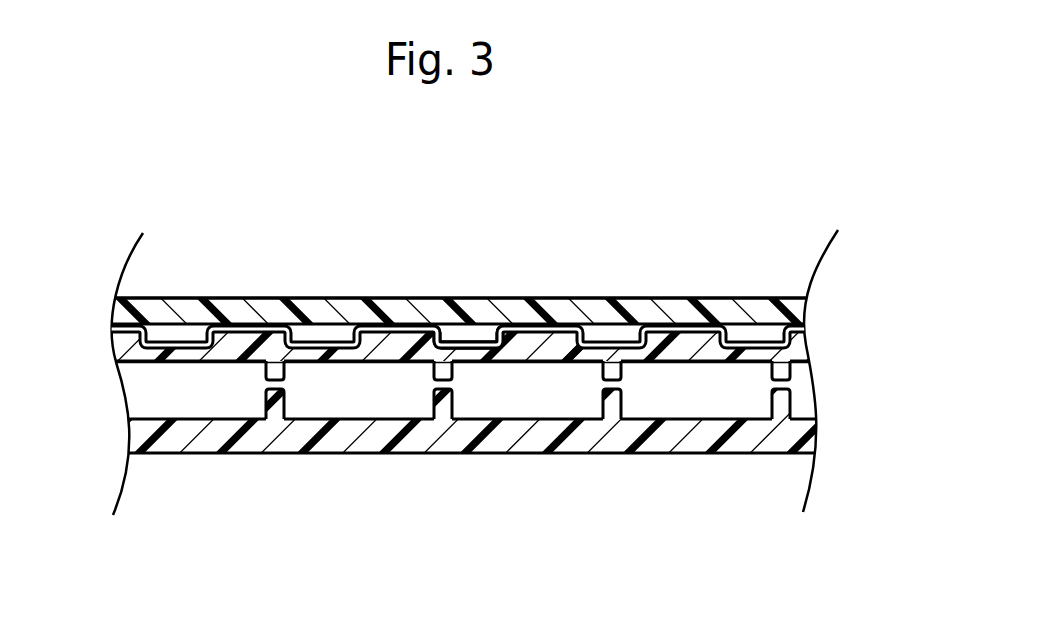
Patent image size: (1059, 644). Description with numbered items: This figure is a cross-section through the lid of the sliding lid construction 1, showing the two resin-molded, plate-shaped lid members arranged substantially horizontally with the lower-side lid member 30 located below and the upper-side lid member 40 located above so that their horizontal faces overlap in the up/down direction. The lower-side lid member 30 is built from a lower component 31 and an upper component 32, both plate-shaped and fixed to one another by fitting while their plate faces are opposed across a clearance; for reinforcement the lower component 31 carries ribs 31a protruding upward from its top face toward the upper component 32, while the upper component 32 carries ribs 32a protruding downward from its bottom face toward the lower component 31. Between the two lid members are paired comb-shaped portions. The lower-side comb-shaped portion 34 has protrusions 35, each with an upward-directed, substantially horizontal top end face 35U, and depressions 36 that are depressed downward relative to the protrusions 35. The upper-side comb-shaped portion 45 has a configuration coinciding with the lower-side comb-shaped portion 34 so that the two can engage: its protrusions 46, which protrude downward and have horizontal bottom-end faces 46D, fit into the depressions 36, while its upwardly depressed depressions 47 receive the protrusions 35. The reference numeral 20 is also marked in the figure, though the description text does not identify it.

The sliding lid construction 1 is at (478, 278).
The cover member 20 is at (287, 273).
The lower-side lid member 30 is at (382, 570).
The lower component 31 is at (294, 440).
The ribs 31a is at (623, 405).
The upper component 32 is at (337, 358).
The ribs 32a is at (623, 342).
The lower-side comb-shaped portion 34 is at (227, 345).
The protrusions 35 is at (660, 337).
The top end face 35U is at (747, 328).
The depressions 36 is at (517, 343).
The upper-side lid member 40 is at (400, 307).
The upper-side comb-shaped portion 45 is at (200, 322).
The protrusions 46 is at (465, 333).
The bottom-end faces 46D is at (473, 337).
The depressions 47 is at (712, 328).